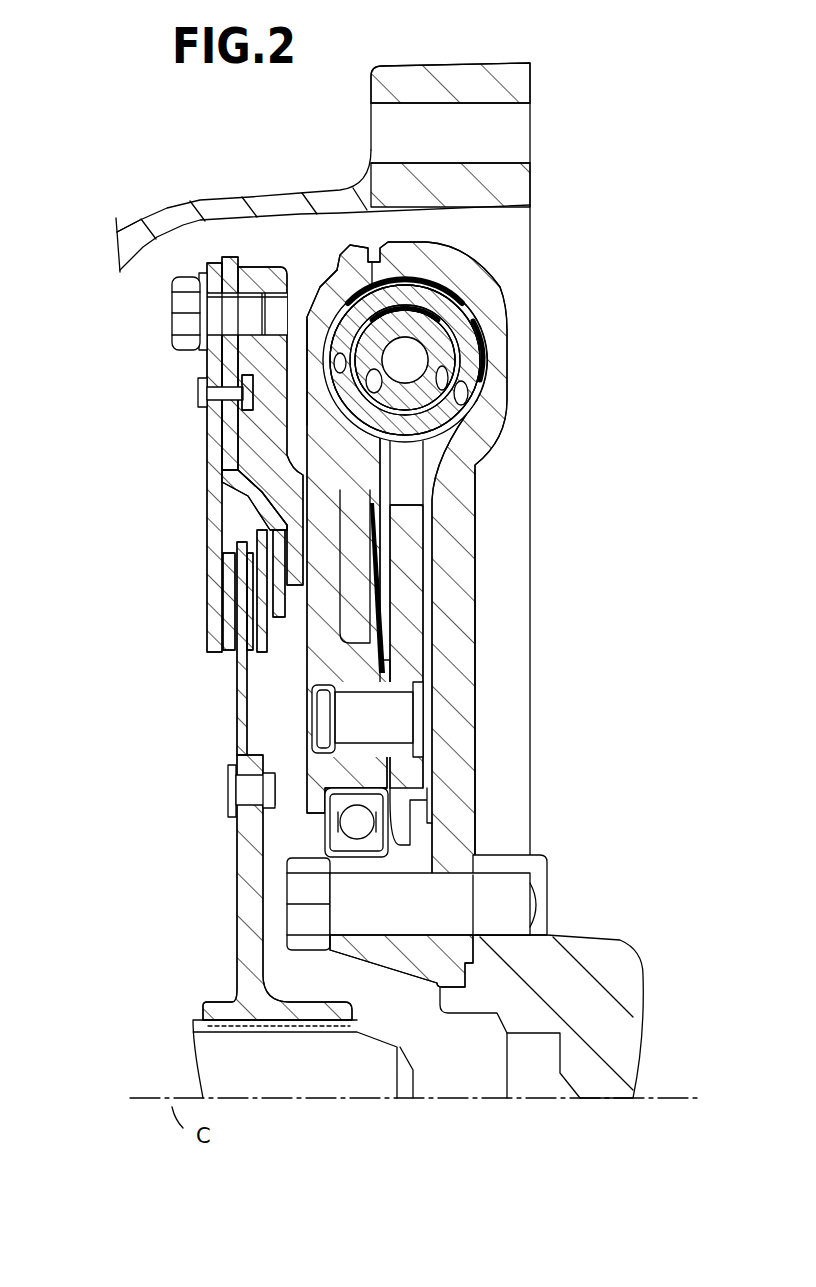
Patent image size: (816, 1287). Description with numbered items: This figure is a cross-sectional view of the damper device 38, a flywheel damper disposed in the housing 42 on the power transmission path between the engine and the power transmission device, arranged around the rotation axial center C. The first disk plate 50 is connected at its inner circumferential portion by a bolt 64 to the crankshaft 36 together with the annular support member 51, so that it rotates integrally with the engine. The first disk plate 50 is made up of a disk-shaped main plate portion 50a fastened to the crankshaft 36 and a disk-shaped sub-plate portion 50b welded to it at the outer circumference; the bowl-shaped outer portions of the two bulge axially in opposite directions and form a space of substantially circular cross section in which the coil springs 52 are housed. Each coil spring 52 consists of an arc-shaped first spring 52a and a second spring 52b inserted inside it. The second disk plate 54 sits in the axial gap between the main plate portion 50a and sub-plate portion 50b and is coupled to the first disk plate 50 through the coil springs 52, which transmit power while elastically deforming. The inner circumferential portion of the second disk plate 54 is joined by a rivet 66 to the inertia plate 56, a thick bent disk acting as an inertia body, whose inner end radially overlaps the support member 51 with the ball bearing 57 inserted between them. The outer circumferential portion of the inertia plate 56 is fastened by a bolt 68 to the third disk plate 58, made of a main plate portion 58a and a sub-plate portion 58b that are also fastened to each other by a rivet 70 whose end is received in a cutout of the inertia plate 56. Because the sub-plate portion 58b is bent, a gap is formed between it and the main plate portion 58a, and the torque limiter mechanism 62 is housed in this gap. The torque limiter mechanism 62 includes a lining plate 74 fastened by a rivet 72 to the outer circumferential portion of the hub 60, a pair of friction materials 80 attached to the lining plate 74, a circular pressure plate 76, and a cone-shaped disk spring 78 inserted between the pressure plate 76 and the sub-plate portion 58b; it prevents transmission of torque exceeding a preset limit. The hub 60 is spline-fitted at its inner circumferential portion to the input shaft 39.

The crankshaft 36 is at (617, 1043).
The damper device 38 is at (121, 331).
The input shaft 39 is at (320, 1072).
The housing 42 is at (477, 80).
The first disk plate 50 is at (490, 617).
The main plate portion 50a is at (457, 545).
The sub-plate portion 50b is at (320, 287).
The support member 51 is at (410, 958).
The coil spring 52 is at (497, 361).
The first spring 52a is at (468, 387).
The second spring 52b is at (478, 332).
The second disk plate 54 is at (405, 665).
The inertia plate 56 is at (257, 453).
The ball bearing 57 is at (350, 820).
The third disk plate 58 is at (205, 484).
The main plate portion 58a is at (217, 448).
The sub-plate portion 58b is at (230, 458).
The hub 60 is at (252, 925).
The torque limiter mechanism 62 is at (196, 604).
The bolt 64 is at (507, 903).
The rivet 66 is at (390, 718).
The bolt 68 is at (252, 307).
The rivet 70 is at (217, 393).
The rivet 72 is at (248, 788).
The lining plate 74 is at (233, 722).
The pressure plate 76 is at (260, 580).
The disk spring 78 is at (278, 603).
The friction materials 80 is at (228, 628).